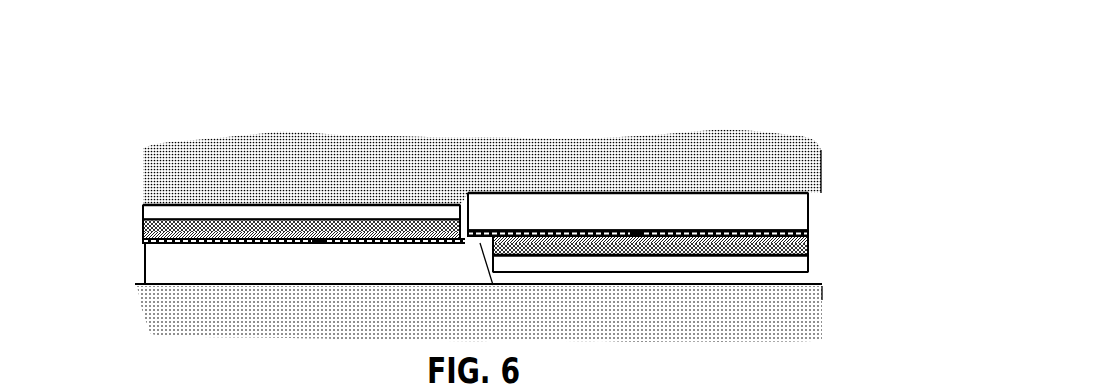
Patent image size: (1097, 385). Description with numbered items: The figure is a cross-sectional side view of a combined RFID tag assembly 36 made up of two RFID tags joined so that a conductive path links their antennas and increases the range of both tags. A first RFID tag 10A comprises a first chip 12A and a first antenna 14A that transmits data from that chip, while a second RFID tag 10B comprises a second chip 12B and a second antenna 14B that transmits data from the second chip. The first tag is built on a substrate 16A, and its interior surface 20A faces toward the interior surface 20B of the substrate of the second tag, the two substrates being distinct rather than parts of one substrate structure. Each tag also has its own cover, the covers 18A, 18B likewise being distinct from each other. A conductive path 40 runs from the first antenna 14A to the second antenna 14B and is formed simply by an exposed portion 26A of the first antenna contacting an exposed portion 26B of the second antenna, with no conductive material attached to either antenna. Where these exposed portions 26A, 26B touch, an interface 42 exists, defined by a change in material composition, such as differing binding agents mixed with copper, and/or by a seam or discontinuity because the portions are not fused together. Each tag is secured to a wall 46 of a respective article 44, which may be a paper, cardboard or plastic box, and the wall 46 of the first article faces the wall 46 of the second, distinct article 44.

The combined RFID tag assembly 36 is at (485, 218).
The article 44 is at (288, 131).
The wall 46 is at (817, 197).
The first RFID tag 10A is at (458, 236).
The second RFID tag 10B is at (681, 242).
The first cover 18A is at (157, 212).
The second cover 18B is at (790, 268).
The first antenna 14A is at (265, 248).
The second antenna 14B is at (689, 230).
The first chip 12A is at (323, 250).
The second chip 12B is at (633, 230).
The first substrate 16A is at (189, 278).
The interior surface of first substrate 20A is at (207, 236).
The interior surface of second substrate 20B is at (754, 247).
The exposed portion of first antenna 26A is at (441, 243).
The exposed portion of second antenna 26B is at (483, 233).
The conductive path 40 is at (472, 258).
The interface 42 is at (477, 247).